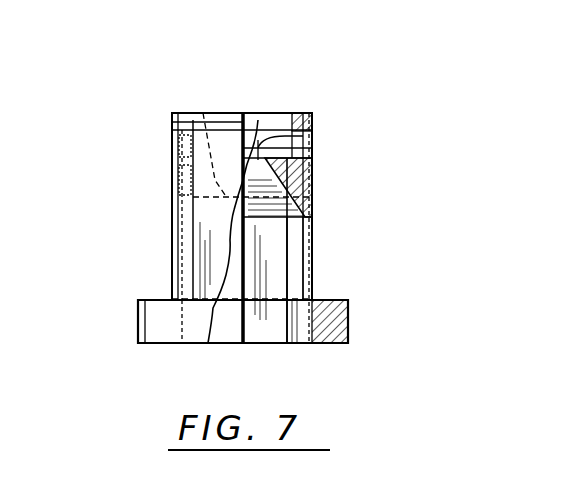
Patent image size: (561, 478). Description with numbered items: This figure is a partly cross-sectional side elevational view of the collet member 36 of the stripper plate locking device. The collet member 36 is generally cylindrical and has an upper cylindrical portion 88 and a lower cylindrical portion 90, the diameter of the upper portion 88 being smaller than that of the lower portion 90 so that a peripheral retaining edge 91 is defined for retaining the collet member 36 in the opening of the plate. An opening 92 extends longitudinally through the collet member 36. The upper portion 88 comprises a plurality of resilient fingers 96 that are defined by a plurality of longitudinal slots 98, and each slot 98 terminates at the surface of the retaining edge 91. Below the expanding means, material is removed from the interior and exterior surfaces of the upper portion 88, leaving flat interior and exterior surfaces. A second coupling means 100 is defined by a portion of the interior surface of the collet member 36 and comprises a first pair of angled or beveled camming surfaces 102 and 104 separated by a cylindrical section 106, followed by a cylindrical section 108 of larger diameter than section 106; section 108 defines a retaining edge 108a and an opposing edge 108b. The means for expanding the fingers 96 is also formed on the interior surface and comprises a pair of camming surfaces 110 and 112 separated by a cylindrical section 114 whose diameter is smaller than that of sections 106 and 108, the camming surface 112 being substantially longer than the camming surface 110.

The collet member 36 is at (236, 48).
The upper cylindrical portion 88 is at (175, 206).
The lower cylindrical portion 90 is at (138, 321).
The peripheral retaining edge 91 is at (150, 300).
The opening 92 is at (176, 258).
The resilient fingers 96 is at (301, 243).
The longitudinal slots 98 is at (290, 266).
The second coupling means 100 is at (175, 125).
The camming surface 102 is at (287, 112).
The camming surface 104 is at (312, 124).
The cylindrical section 106 is at (305, 113).
The cylindrical section 108 is at (312, 154).
The retaining edge 108a is at (172, 155).
The opposing edge 108b is at (172, 186).
The camming surface 110 is at (312, 146).
The camming surface 112 is at (313, 200).
The cylindrical section 114 is at (203, 113).